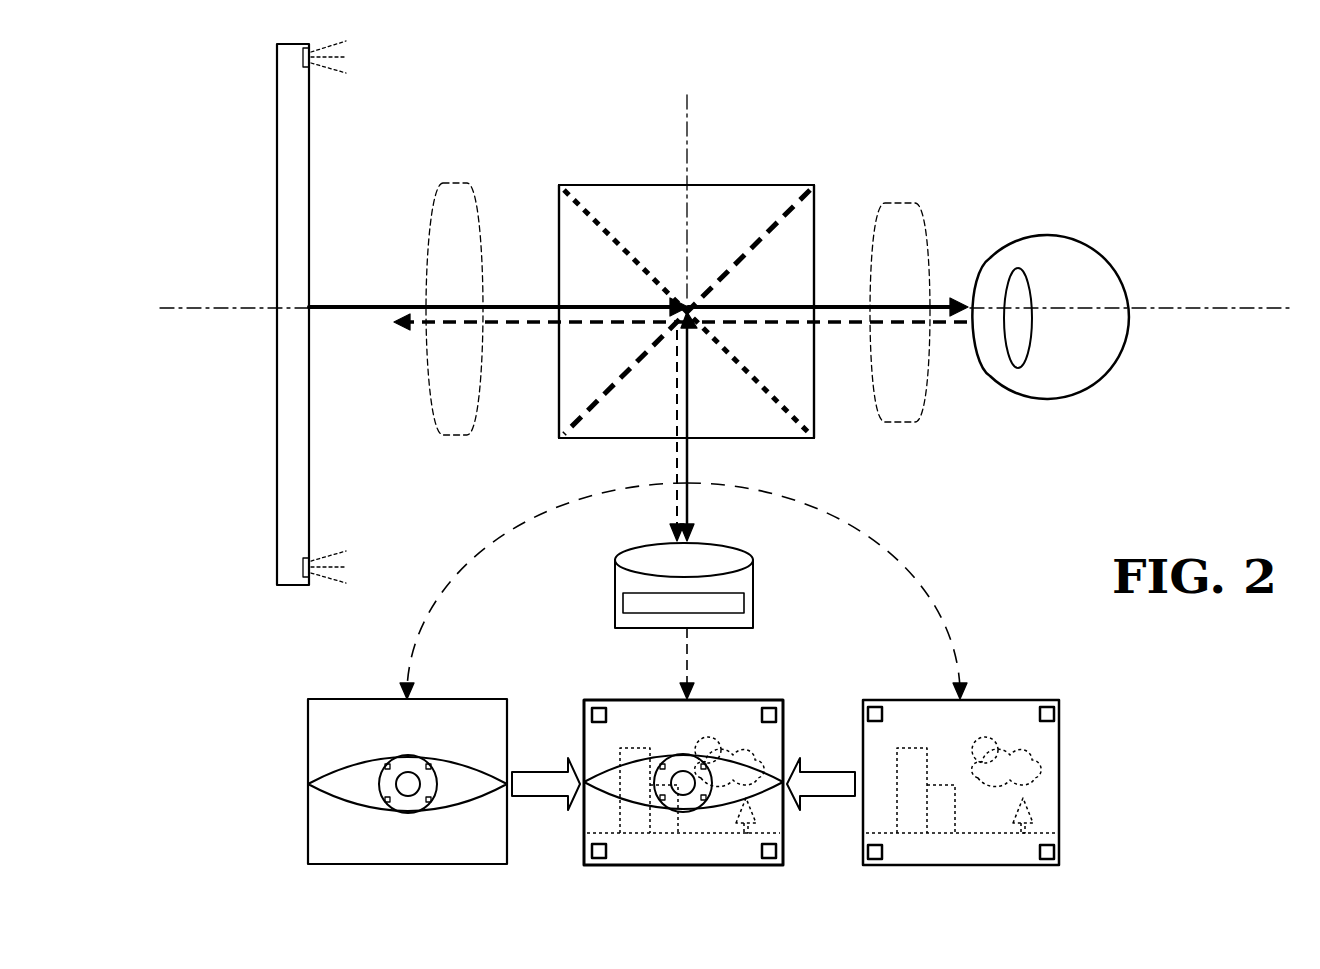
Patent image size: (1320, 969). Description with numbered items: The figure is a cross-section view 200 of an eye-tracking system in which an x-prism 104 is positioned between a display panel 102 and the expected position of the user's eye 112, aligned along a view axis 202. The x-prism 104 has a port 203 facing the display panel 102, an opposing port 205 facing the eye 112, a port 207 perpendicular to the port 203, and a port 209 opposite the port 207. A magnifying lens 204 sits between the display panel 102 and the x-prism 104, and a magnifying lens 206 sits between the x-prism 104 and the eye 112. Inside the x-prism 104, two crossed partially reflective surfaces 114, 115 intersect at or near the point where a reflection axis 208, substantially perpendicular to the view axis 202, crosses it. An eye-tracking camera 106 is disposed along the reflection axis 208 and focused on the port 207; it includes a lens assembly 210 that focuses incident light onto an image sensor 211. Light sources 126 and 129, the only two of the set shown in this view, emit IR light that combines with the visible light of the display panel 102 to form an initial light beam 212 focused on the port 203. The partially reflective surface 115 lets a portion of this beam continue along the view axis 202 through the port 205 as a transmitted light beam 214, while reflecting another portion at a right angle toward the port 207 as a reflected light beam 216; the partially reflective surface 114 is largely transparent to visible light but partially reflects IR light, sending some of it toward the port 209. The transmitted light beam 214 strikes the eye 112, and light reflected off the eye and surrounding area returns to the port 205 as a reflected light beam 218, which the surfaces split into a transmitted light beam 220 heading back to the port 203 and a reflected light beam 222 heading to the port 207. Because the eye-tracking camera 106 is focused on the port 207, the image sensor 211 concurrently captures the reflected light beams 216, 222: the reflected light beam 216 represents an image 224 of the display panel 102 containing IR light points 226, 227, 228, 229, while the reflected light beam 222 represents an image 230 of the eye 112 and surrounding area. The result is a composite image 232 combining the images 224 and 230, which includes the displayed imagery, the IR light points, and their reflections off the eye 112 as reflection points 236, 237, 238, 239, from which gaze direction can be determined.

The cross-section view 200 is at (584, 96).
The display panel 102 is at (310, 163).
The x-prism 104 is at (686, 308).
The eye-tracking camera 106 is at (692, 621).
The eye 112 is at (1064, 234).
The partially reflective surface 114 is at (750, 244).
The partially reflective surface 115 is at (616, 240).
The light source 126 is at (303, 56).
The light source 129 is at (303, 567).
The view axis 202 is at (226, 302).
The port 203 is at (553, 282).
The magnifying lens 204 is at (456, 182).
The port 205 is at (820, 243).
The magnifying lens 206 is at (897, 202).
The port 207 is at (600, 445).
The reflection axis 208 is at (689, 118).
The port 209 is at (719, 180).
The lens assembly 210 is at (618, 561).
The image sensor 211 is at (622, 606).
The initial light beam 212 is at (358, 302).
The transmitted light beam 214 is at (840, 304).
The reflected light beam 216 is at (690, 462).
The reflected light beam 218 is at (848, 330).
The transmitted light beam 220 is at (510, 330).
The reflected light beam 222 is at (674, 462).
The image of the display panel 224 is at (967, 782).
The IR light point 226 is at (870, 714).
The IR light point 227 is at (1052, 714).
The IR light point 228 is at (1052, 852).
The IR light point 229 is at (870, 852).
The image of the eye 230 is at (377, 781).
The composite image 232 is at (626, 698).
The reflection point 236 is at (387, 763).
The reflection point 237 is at (429, 763).
The reflection point 238 is at (429, 803).
The reflection point 239 is at (387, 803).